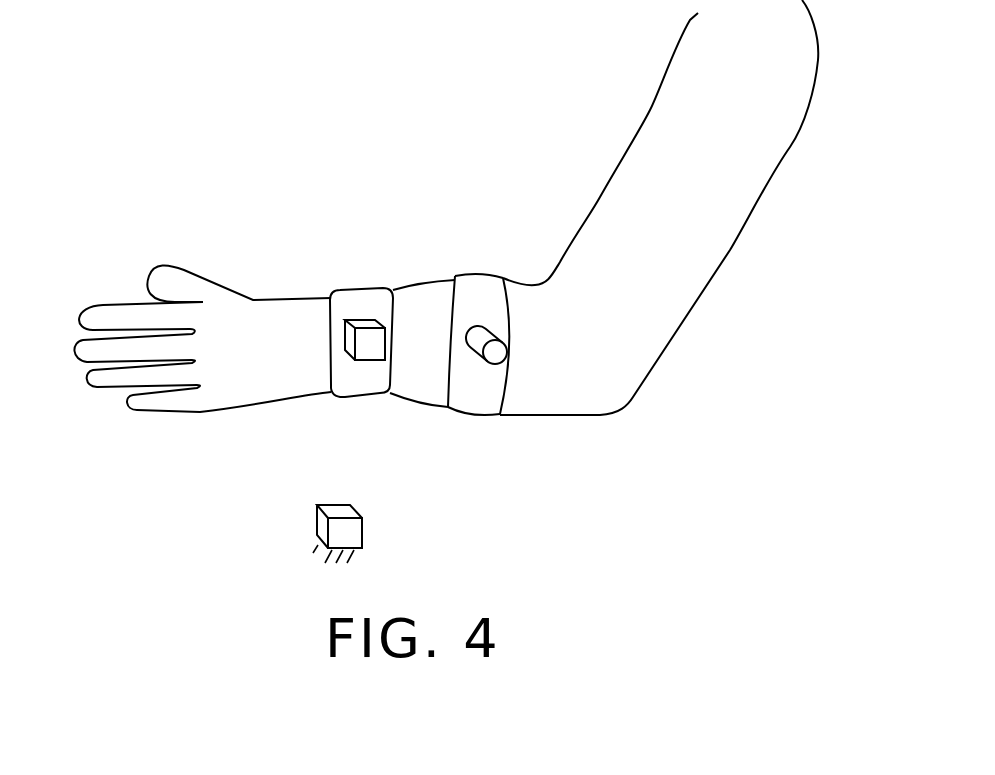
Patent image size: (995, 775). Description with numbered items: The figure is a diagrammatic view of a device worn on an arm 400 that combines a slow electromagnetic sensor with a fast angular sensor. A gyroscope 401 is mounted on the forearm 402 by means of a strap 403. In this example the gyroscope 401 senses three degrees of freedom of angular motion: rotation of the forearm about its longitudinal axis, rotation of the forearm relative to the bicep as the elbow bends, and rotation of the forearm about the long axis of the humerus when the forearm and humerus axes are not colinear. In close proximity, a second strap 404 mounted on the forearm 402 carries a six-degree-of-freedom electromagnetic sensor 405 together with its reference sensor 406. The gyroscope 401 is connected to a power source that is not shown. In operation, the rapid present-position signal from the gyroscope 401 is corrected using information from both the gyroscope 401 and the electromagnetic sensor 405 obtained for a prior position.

The arm 400 is at (741, 270).
The gyroscope 401 is at (493, 350).
The forearm 402 is at (427, 372).
The strap 403 is at (483, 402).
The strap 404 is at (352, 385).
The 6-DOF-E 405 is at (370, 342).
The reference sensor 406 is at (350, 533).